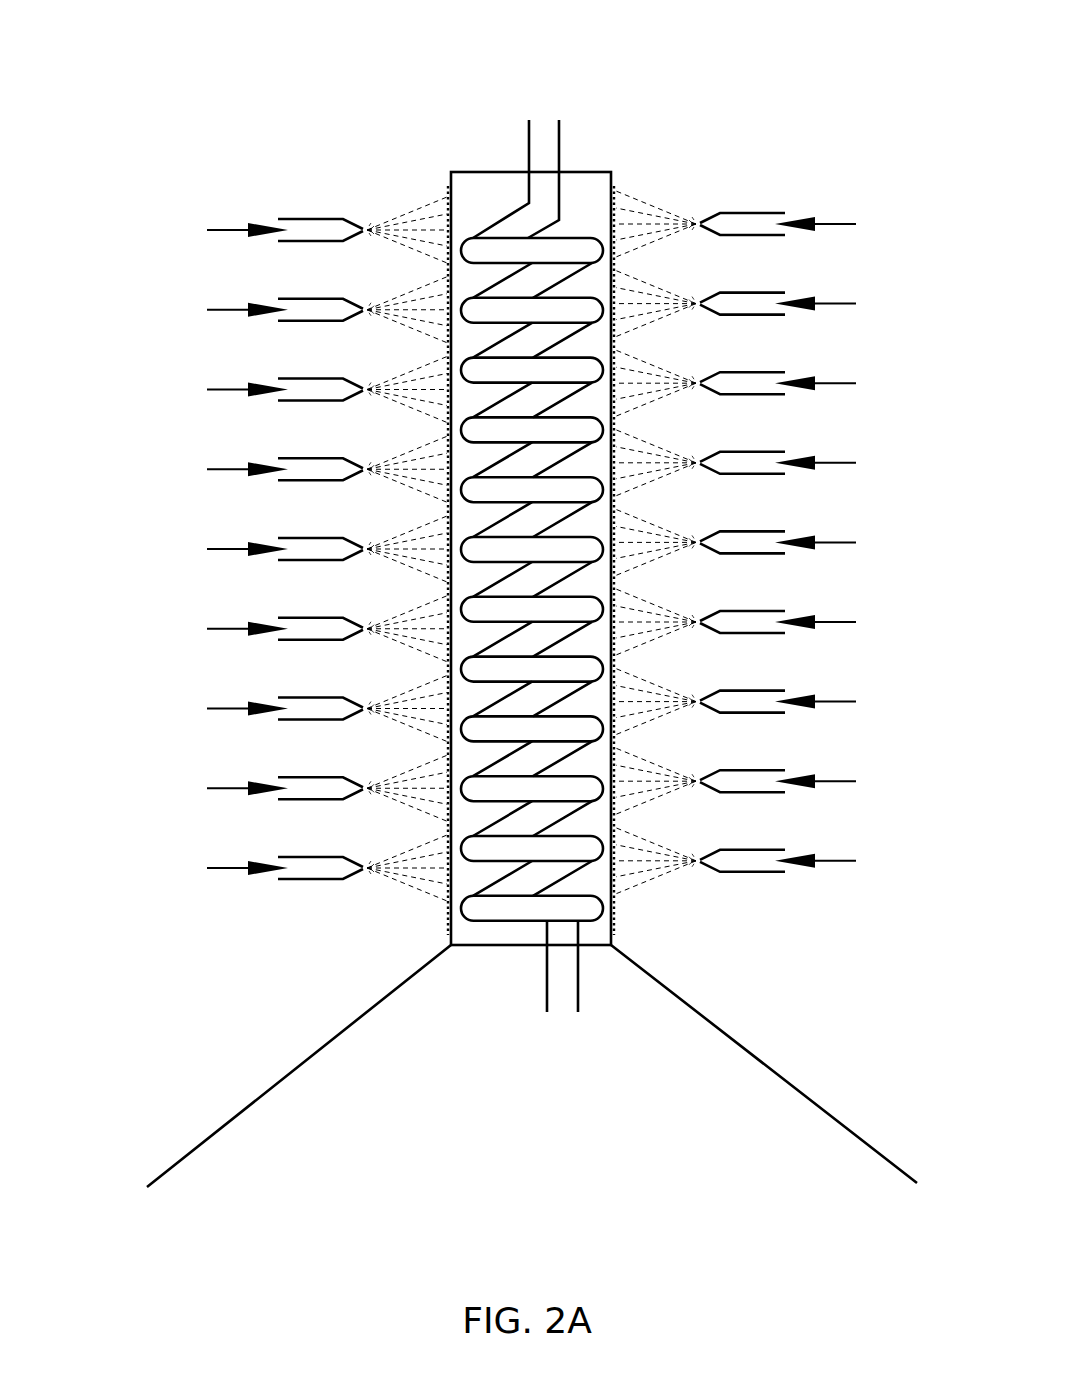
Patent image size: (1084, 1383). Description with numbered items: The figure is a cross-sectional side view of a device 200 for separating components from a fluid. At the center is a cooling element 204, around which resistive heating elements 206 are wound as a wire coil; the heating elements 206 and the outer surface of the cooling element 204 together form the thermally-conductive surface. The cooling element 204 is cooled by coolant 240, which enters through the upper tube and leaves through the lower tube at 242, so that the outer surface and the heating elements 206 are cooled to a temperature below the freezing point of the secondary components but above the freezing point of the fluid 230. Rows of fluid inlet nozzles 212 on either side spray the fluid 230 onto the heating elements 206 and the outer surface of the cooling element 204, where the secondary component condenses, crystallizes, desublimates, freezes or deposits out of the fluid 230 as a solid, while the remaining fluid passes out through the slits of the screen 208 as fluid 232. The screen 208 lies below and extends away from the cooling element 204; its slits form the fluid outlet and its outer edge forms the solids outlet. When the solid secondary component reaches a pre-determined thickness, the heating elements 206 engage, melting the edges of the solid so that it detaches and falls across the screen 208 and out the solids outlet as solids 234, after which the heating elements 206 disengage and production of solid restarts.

The device for use in separating components from a fluid 200 is at (158, 62).
The cooling element 204 is at (473, 172).
The resistive heating elements 206 is at (617, 190).
The screen 208 is at (372, 1002).
The fluid inlet nozzles 212 is at (313, 218).
The fluid 230 is at (217, 230).
The fluid 232 is at (360, 1018).
The solids 234 is at (182, 1123).
The coolant 240 is at (545, 87).
The coil fluid outlet 242 is at (562, 1013).